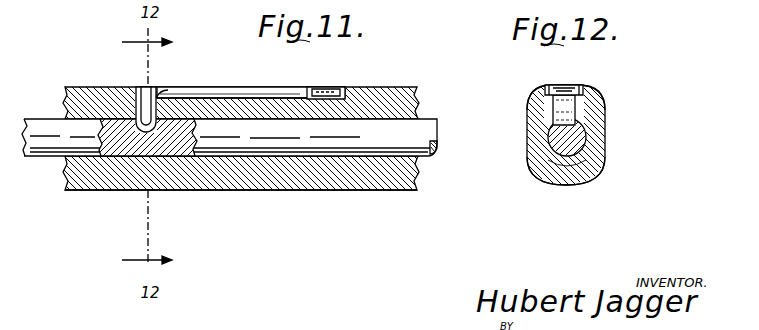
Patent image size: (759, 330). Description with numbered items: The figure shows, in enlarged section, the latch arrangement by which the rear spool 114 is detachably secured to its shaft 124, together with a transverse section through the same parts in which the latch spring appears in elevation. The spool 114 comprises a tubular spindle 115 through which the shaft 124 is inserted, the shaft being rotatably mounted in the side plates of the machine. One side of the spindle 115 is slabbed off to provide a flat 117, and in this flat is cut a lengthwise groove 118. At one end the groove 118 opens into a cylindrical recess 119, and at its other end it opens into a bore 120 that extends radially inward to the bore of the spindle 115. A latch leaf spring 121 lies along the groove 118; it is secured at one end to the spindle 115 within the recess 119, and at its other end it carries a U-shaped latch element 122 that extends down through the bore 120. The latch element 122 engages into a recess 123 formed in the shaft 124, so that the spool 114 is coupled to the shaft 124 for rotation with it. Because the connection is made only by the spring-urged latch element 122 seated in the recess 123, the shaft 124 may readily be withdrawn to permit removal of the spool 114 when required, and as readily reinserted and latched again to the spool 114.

In FIG. 11, the rear spool 114 is at (371, 196).
In FIG. 12, the rear spool 114 is at (550, 184).
In FIG. 11, the tubular spindle 115 is at (325, 190).
In FIG. 12, the tubular spindle 115 is at (541, 96).
In FIG. 11, the flat 117 is at (384, 87).
In FIG. 12, the flat 117 is at (527, 135).
In FIG. 11, the lengthwise groove 118 is at (216, 88).
In FIG. 11, the cylindrical recess 119 is at (344, 87).
In FIG. 11, the bore 120 is at (136, 90).
In FIG. 12, the bore 120 is at (575, 112).
In FIG. 11, the latch leaf spring 121 is at (256, 97).
In FIG. 11, the U-shaped latch element 122 is at (155, 90).
In FIG. 12, the U-shaped latch element 122 is at (580, 97).
In FIG. 11, the recess 123 is at (127, 133).
In FIG. 12, the recess 123 is at (549, 142).
In FIG. 11, the shaft 124 is at (433, 156).
In FIG. 12, the shaft 124 is at (596, 160).